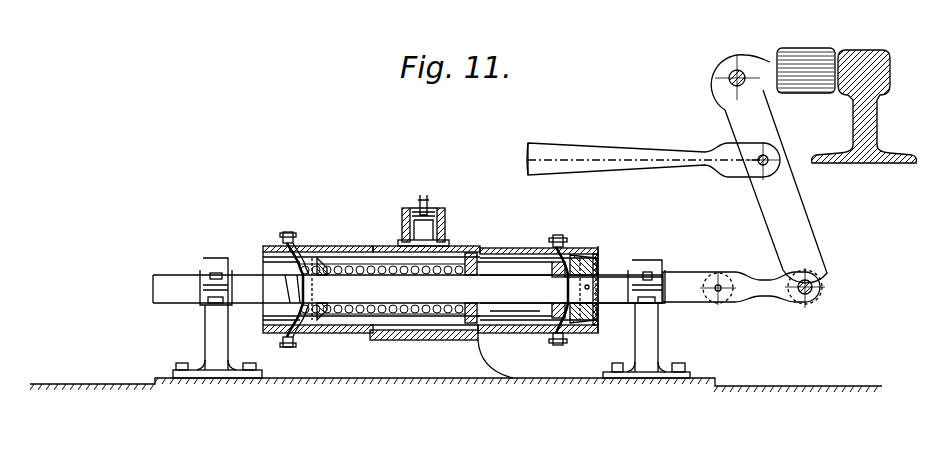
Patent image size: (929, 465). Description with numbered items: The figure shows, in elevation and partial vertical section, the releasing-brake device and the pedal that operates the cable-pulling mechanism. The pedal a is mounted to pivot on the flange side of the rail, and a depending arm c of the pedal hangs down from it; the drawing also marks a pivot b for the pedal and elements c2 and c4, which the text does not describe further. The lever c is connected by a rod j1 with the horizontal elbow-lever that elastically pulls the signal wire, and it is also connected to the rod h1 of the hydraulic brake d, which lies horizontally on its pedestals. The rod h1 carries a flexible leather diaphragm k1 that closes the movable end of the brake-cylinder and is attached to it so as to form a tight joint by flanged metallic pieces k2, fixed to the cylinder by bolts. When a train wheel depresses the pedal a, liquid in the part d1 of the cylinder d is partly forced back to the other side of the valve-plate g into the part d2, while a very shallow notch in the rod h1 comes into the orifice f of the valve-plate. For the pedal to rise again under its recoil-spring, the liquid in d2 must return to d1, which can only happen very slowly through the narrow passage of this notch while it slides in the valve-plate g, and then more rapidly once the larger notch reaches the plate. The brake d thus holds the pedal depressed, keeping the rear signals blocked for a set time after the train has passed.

The pedal a is at (812, 62).
The lever pivot b is at (737, 78).
The depending arm of the pedal c is at (800, 234).
The piston rod outer end c2 is at (596, 289).
The rod collar c4 is at (490, 277).
The hydraulic brake d is at (449, 339).
The part of the cylinder d1 is at (487, 337).
The part of the cylinder d2 is at (372, 337).
The orifice of the valve-plate f is at (490, 275).
The valve-plate g is at (483, 275).
The rod of the brake-cylinder h1 is at (687, 278).
The rod j1 is at (598, 152).
The flexible diaphragm k1 is at (600, 252).
The flanged metallic pieces k2 is at (590, 343).